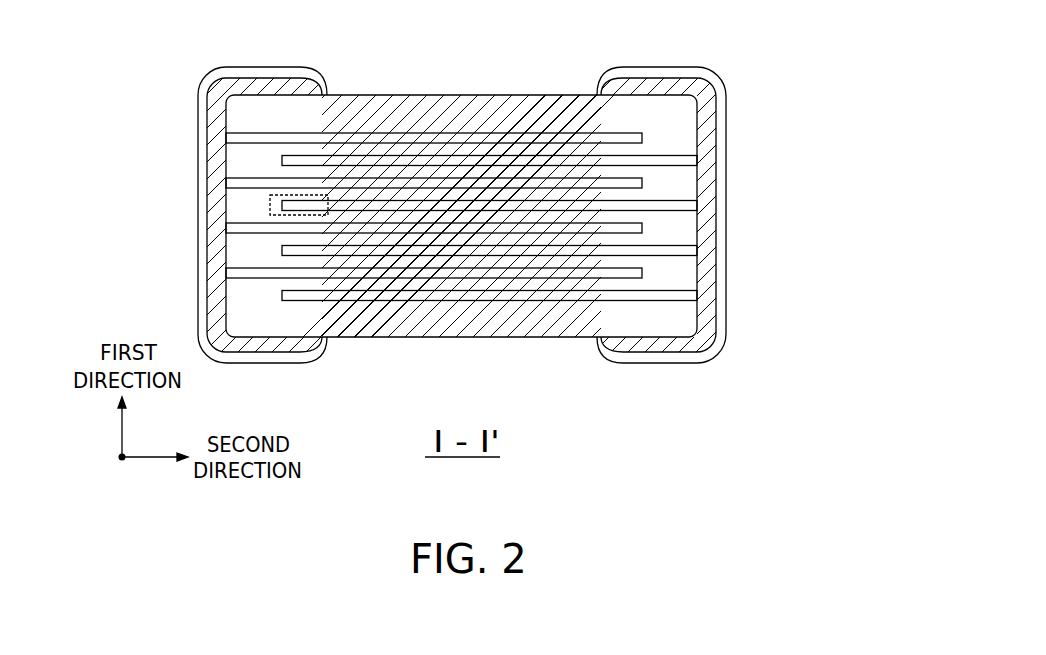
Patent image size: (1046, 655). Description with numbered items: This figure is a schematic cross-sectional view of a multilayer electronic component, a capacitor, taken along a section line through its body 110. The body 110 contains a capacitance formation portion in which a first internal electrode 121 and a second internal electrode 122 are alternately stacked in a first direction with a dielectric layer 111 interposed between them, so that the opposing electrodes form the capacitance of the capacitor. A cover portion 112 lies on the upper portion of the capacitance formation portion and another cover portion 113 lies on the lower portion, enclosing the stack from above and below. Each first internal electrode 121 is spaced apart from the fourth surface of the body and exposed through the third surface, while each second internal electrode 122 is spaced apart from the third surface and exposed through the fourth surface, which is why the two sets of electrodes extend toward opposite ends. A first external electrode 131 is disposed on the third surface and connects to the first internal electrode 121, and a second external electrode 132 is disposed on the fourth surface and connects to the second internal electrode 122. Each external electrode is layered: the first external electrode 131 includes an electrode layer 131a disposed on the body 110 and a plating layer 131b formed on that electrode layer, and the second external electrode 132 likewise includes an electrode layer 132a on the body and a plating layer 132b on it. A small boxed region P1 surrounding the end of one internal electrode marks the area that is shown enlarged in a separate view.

The body 110 is at (395, 95).
The dielectric layer 111 is at (345, 172).
The cover portion 112 is at (467, 112).
The cover portion 113 is at (377, 320).
The first internal electrode 121 is at (528, 132).
The second internal electrode 122 is at (590, 157).
The first external electrode 131 is at (324, 215).
The electrode layer 131a is at (218, 145).
The plating layer 131b is at (203, 172).
The second external electrode 132 is at (654, 215).
The electrode layer 132a is at (705, 122).
The plating layer 132b is at (720, 147).
The region P1 is at (293, 215).